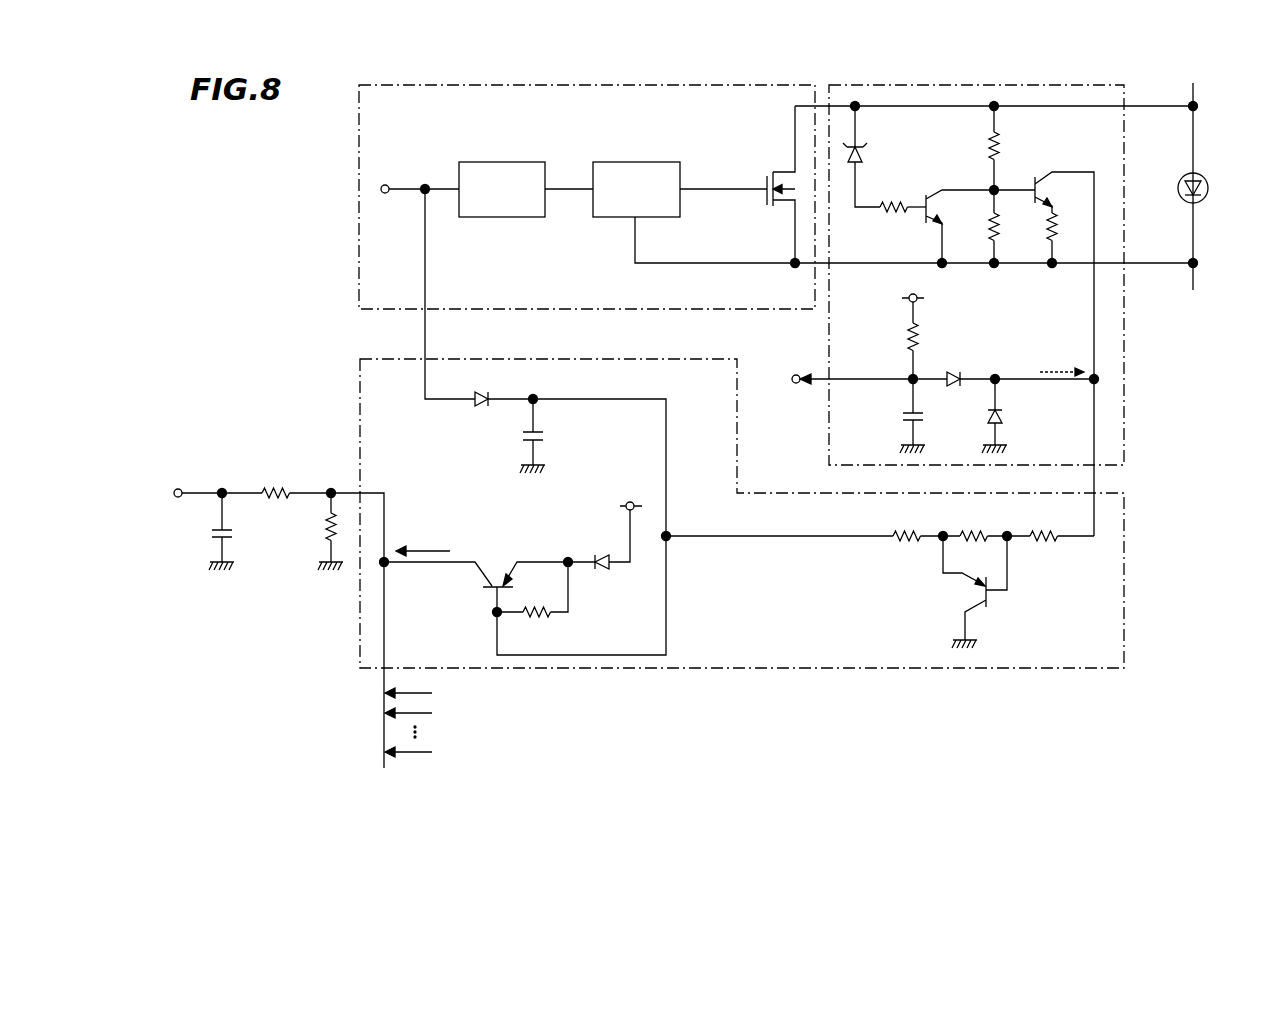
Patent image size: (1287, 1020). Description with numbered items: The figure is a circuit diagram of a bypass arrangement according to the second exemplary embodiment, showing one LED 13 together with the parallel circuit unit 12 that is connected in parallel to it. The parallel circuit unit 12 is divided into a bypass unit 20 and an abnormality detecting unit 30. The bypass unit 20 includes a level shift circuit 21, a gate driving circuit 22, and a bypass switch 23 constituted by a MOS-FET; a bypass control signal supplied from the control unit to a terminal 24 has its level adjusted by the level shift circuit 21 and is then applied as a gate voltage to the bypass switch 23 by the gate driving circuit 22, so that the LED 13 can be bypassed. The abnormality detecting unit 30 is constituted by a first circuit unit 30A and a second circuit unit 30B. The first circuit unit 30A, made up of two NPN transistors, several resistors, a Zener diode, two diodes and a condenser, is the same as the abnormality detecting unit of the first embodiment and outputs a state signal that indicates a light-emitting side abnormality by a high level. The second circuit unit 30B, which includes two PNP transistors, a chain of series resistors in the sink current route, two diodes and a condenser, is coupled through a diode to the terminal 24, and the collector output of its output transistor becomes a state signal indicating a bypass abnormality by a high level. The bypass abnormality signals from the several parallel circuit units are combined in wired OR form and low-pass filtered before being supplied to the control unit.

The parallel circuit unit 12 is at (678, 62).
The LED 13 is at (1208, 188).
The bypass unit 20 is at (481, 85).
The level shift circuit 21 is at (505, 162).
The gate driving circuit 22 is at (630, 162).
The bypass switch 23 is at (765, 176).
The terminal 24 is at (389, 184).
The abnormality detecting unit 30 is at (1203, 437).
The first circuit unit 30A is at (1124, 432).
The second circuit unit 30B is at (1124, 513).